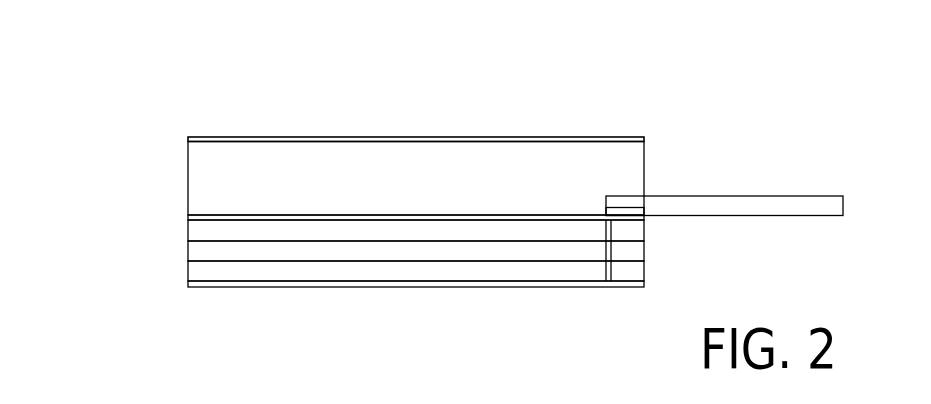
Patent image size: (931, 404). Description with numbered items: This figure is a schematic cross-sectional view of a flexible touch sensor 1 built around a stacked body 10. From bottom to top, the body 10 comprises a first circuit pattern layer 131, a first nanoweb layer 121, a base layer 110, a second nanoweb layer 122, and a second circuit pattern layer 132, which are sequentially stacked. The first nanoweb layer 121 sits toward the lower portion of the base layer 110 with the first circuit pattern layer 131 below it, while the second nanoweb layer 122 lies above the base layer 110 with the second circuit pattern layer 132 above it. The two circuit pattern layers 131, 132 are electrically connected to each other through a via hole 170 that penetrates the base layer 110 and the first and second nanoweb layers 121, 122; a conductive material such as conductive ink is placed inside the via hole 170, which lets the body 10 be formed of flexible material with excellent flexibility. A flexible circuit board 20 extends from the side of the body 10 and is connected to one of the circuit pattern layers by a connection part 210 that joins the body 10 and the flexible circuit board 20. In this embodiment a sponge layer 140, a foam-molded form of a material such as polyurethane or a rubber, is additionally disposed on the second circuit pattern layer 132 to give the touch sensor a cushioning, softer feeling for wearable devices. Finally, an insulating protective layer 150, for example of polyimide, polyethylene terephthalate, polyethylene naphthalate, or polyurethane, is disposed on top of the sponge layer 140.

The flexible touch sensor 1 is at (219, 44).
The body 10 is at (336, 250).
The flexible circuit board 20 is at (745, 207).
The base layer 110 is at (195, 250).
The first nanoweb layer 121 is at (195, 269).
The second nanoweb layer 122 is at (195, 232).
The first circuit pattern layer 131 is at (367, 306).
The second circuit pattern layer 132 is at (192, 218).
The sponge layer 140 is at (193, 178).
The protective layer 150 is at (190, 139).
The via hole 170 is at (610, 249).
The connection part 210 is at (639, 210).